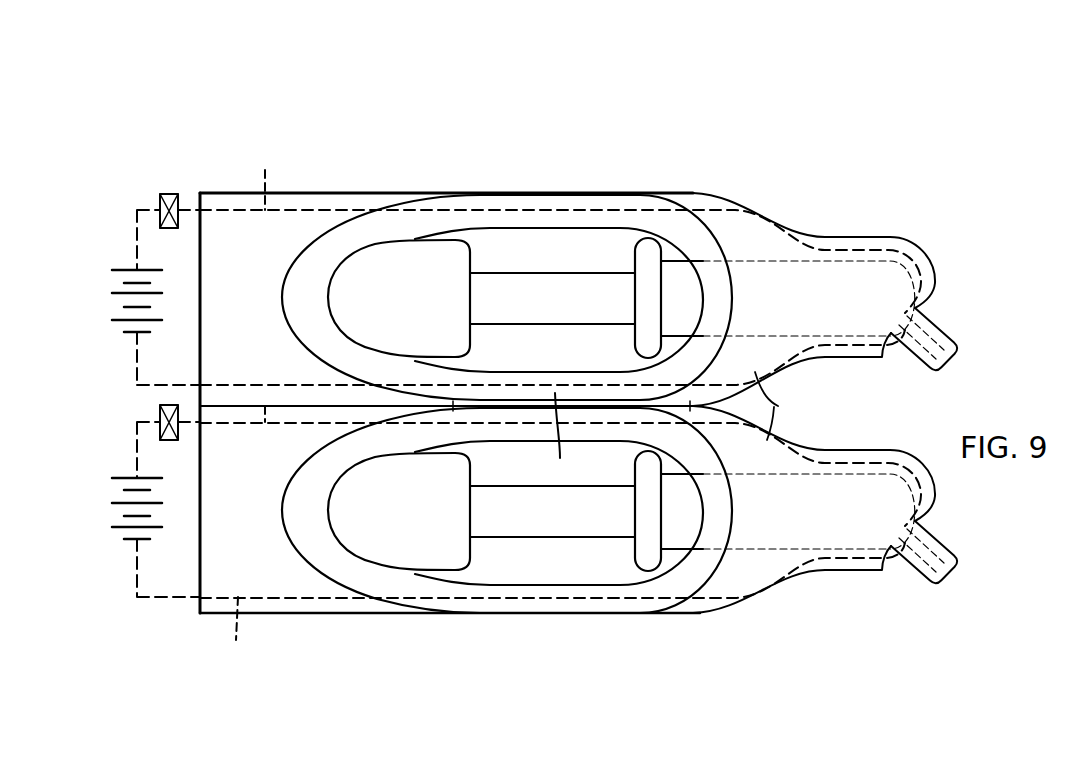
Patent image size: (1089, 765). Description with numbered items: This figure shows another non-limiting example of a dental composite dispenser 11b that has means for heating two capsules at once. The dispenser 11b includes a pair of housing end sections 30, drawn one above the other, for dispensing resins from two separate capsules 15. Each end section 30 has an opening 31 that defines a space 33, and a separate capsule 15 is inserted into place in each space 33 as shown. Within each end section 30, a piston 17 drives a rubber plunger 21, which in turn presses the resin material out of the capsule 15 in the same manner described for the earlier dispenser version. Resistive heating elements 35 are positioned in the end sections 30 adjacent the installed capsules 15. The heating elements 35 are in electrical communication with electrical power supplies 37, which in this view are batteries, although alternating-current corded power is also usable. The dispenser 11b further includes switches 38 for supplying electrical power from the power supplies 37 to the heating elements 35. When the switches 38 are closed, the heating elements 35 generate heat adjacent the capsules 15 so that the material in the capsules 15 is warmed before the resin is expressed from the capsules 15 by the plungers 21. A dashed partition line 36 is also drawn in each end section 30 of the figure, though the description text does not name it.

The dental composite dispenser 11b is at (756, 156).
The capsules 15 is at (677, 502).
The piston 17 is at (386, 353).
The rubber plunger 21 is at (519, 335).
The housing end sections 30 is at (347, 190).
The opening 31 is at (452, 205).
The space 33 is at (557, 247).
The resistive heating elements 35 is at (766, 227).
The partition 36 is at (262, 404).
The electrical power supplies 37 is at (102, 300).
The switches 38 is at (163, 193).